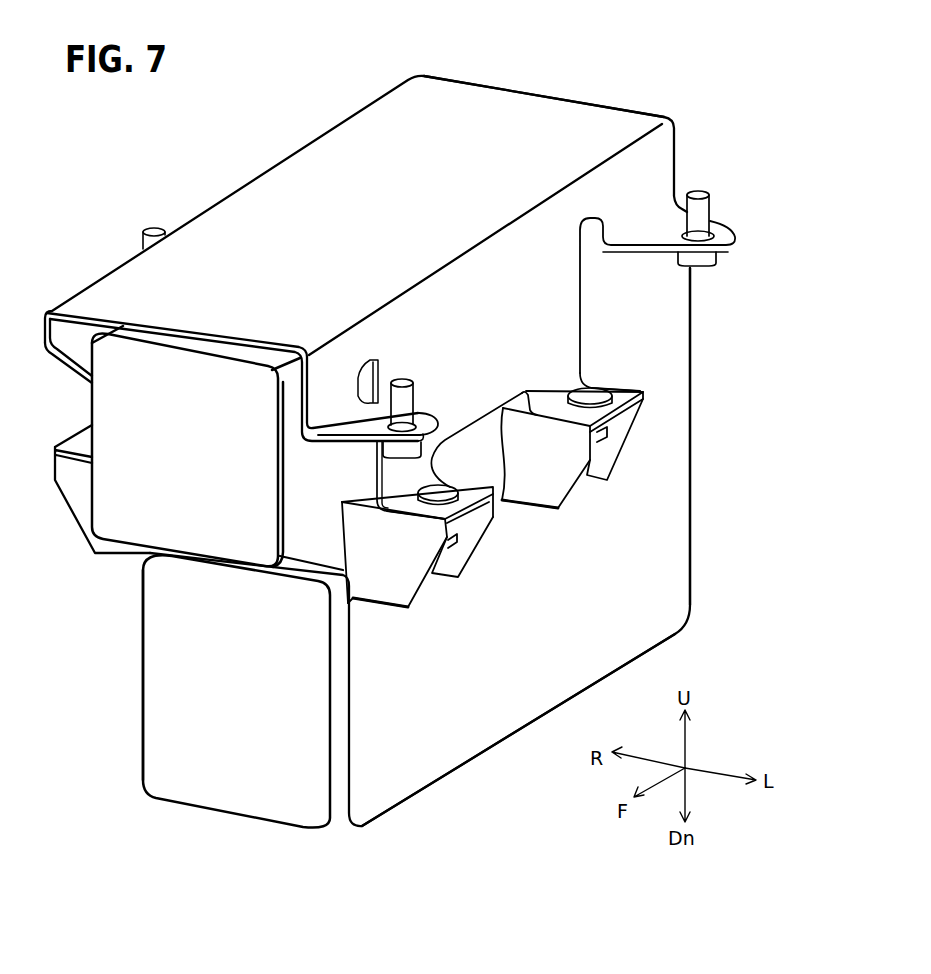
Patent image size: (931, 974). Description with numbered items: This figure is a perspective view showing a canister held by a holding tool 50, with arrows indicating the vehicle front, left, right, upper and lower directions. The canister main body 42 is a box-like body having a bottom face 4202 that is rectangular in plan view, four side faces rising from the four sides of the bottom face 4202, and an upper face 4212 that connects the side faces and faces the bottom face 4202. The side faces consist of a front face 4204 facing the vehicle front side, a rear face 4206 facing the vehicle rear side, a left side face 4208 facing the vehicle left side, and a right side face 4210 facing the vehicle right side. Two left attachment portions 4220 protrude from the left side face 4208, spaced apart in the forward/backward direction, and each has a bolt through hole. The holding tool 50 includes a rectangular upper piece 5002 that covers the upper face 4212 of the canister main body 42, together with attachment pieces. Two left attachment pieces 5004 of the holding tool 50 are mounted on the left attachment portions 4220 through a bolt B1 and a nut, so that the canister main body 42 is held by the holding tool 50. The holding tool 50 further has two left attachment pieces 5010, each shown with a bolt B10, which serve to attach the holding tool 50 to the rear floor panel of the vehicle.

The holding tool 50 is at (302, 172).
The upper piece 5002 is at (495, 130).
The left attachment piece 5010 is at (380, 412).
The bolt B10 is at (403, 461).
The canister main body 42 is at (487, 767).
The bottom face 4202 is at (443, 775).
The front face 4204 is at (230, 753).
The rear face 4206 is at (690, 516).
The left side face 4208 is at (643, 568).
The right side face 4210 is at (143, 677).
The upper face 4212 is at (198, 348).
The left attachment portion 4220 is at (400, 558).
The left attachment piece 5004 is at (470, 488).
The bolt B1 is at (453, 485).